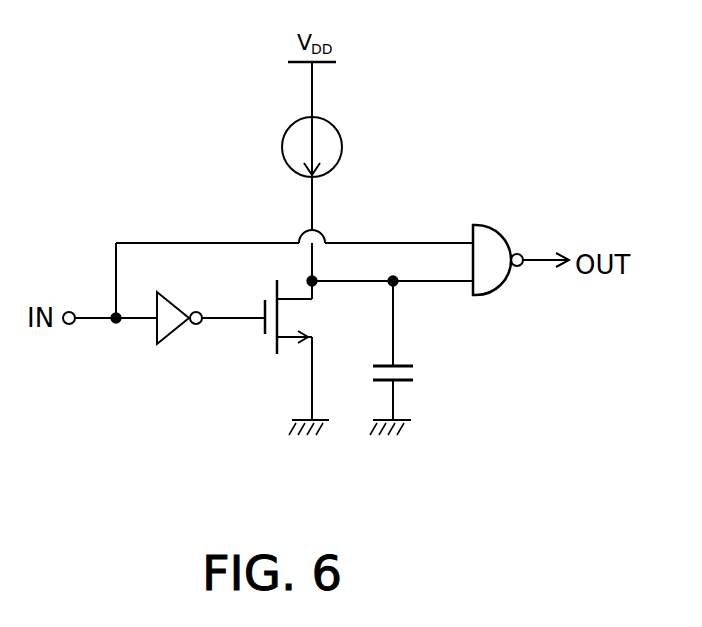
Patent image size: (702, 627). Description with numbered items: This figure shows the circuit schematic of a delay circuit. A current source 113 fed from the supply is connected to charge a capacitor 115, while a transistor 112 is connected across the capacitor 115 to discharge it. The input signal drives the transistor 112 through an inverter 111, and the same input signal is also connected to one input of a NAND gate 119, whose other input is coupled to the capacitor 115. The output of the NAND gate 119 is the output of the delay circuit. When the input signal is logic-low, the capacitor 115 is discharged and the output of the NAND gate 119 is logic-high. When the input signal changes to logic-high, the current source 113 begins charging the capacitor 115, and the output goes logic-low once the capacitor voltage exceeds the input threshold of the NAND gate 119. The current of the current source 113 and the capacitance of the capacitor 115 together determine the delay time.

The inverter 111 is at (170, 326).
The transistor 112 is at (293, 353).
The current source 113 is at (342, 148).
The capacitor 115 is at (421, 372).
The NAND gate 119 is at (497, 277).